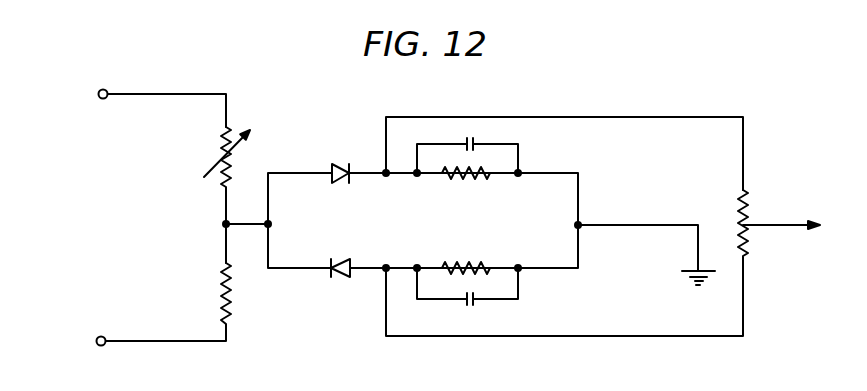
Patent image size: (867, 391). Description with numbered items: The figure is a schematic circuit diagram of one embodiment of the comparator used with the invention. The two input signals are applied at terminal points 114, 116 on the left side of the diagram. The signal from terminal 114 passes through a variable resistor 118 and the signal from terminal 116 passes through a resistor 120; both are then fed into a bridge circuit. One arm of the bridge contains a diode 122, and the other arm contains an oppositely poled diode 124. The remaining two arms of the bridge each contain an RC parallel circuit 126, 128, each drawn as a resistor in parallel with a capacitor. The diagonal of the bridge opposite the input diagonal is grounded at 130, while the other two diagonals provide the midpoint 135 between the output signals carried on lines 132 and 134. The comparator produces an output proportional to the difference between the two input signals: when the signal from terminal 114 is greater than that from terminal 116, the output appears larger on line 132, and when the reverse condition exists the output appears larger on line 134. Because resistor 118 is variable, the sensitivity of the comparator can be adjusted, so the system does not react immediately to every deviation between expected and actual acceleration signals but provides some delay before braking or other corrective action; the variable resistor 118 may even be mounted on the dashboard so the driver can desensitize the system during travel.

The terminal point 114 is at (98, 95).
The terminal point 116 is at (97, 336).
The variable resistor 118 is at (222, 148).
The resistor 120 is at (217, 284).
The diode 122 is at (338, 166).
The oppositely poled diode 124 is at (338, 278).
The RC parallel circuit 126 is at (516, 141).
The RC parallel circuit 128 is at (528, 323).
The ground 130 is at (663, 222).
The output line 132 is at (548, 115).
The output line 134 is at (605, 338).
The midpoint 135 is at (785, 224).